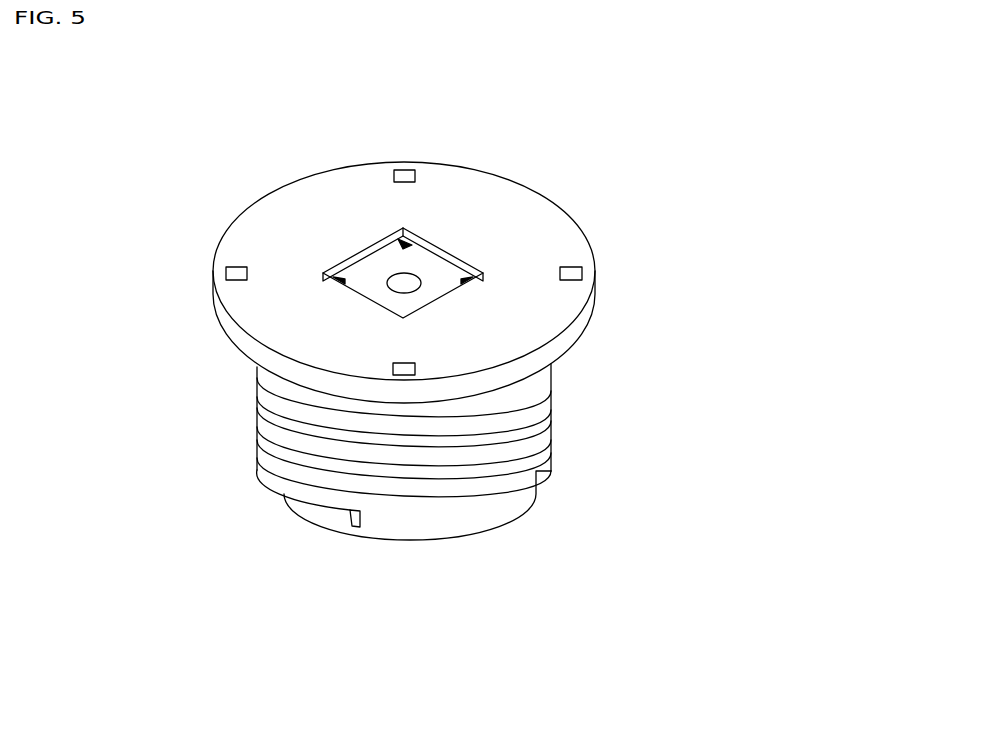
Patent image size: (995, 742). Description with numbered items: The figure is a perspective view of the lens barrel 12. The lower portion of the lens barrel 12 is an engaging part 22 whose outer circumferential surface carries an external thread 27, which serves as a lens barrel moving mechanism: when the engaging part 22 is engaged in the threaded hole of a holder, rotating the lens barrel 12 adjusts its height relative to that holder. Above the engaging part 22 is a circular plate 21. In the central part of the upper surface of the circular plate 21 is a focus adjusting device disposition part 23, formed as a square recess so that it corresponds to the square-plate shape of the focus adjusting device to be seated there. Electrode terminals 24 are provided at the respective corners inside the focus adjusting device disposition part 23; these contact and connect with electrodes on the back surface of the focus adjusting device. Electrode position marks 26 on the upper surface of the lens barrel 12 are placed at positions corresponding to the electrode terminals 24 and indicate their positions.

The lens barrel 12 is at (247, 208).
The circular plate 21 is at (555, 313).
The engaging part 22 is at (515, 492).
The focus adjusting device disposition part 23 is at (440, 287).
The electrode terminal 24 is at (466, 282).
The electrode position mark 26 is at (580, 268).
The external thread 27 is at (342, 513).